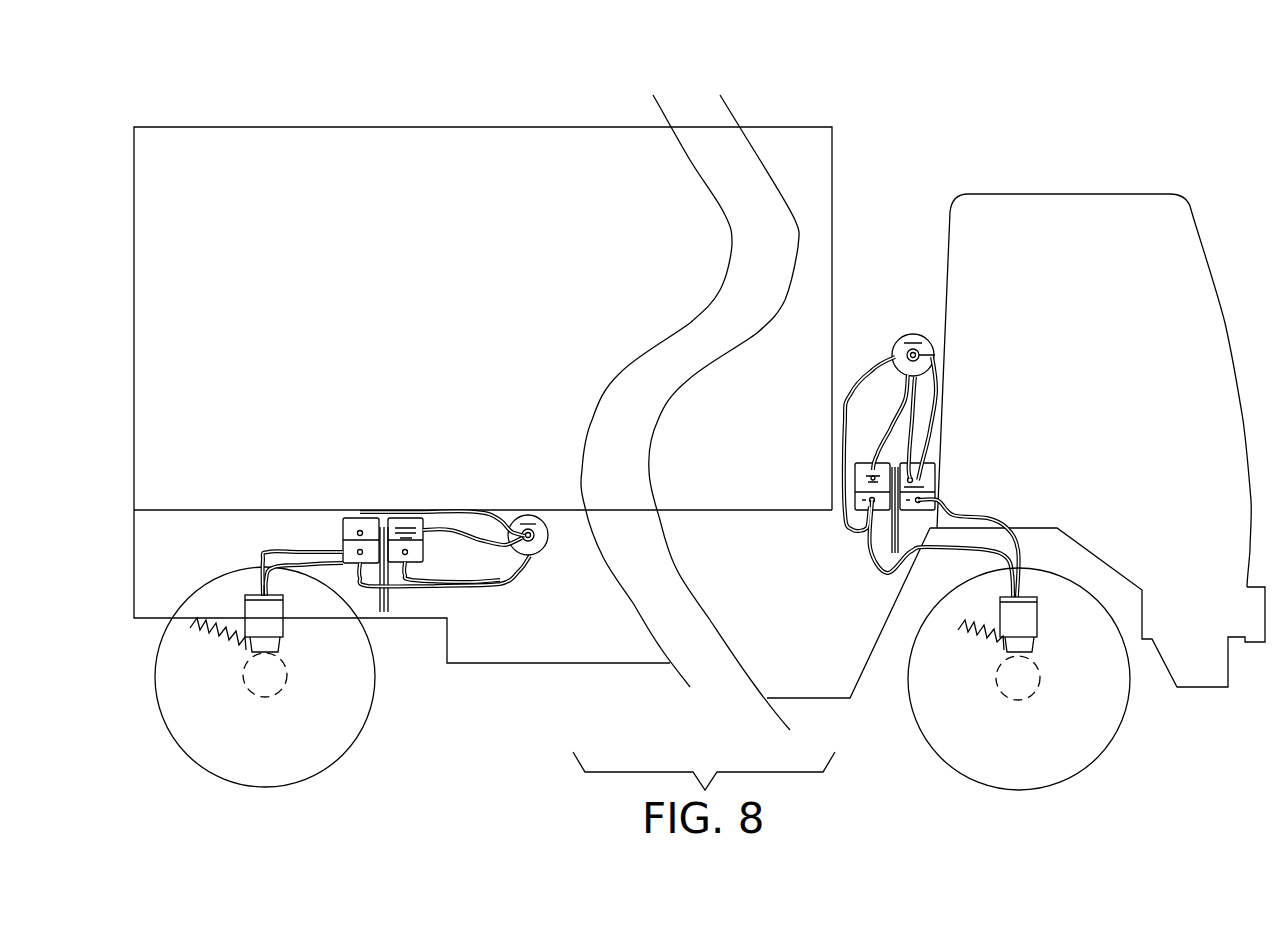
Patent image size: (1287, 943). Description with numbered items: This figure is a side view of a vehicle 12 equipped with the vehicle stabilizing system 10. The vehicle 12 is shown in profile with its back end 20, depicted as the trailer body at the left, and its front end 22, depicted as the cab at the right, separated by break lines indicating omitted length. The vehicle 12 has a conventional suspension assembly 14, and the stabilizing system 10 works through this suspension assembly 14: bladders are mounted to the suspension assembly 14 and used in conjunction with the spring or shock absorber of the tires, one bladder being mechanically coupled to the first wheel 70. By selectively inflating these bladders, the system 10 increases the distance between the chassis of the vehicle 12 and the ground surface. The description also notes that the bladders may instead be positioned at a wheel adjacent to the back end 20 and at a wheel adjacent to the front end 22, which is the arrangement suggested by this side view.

The vehicle stabilizing system 10 is at (1100, 153).
The vehicle 12 is at (937, 290).
The suspension assembly 14 is at (217, 623).
The back end 20 is at (133, 153).
The front end 22 is at (1227, 322).
The first wheel 70 is at (1090, 760).